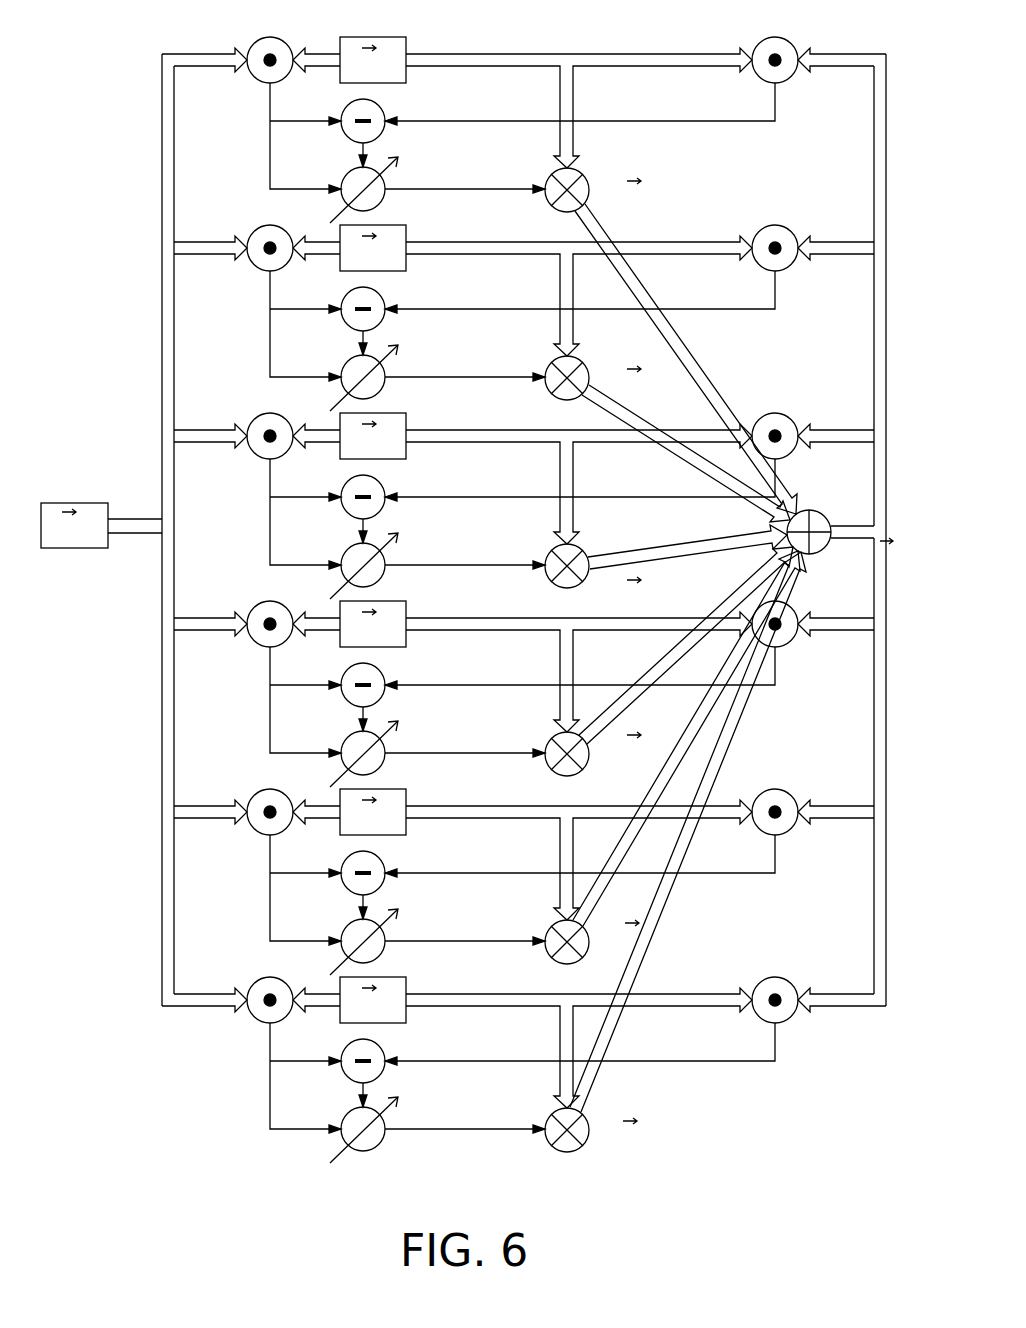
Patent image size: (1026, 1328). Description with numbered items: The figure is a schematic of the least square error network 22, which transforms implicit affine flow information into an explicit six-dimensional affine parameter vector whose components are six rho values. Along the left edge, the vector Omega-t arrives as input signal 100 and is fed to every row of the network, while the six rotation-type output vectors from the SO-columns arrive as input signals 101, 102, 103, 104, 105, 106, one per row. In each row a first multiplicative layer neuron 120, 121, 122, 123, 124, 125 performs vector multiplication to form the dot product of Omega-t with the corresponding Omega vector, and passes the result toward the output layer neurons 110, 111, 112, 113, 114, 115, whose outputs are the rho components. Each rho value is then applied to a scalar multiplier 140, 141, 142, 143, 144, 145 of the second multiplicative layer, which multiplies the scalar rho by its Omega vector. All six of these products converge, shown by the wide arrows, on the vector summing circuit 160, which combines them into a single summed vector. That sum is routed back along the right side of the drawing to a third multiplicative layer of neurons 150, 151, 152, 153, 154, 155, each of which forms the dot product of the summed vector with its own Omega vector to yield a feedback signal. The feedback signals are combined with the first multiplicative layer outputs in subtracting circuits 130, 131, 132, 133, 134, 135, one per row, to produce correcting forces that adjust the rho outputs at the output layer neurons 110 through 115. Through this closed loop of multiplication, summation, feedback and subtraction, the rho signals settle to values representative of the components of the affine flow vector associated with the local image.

The least square error (LSE) network 22 is at (849, 1033).
The input signal 100 is at (90, 549).
The input signal 101 is at (408, 43).
The input signal 102 is at (408, 231).
The input signal 103 is at (408, 419).
The input signal 104 is at (408, 607).
The input signal 105 is at (408, 795).
The input signal 106 is at (408, 983).
The output layer neuron 110 is at (393, 177).
The output layer neuron 111 is at (393, 365).
The output layer neuron 112 is at (393, 553).
The output layer neuron 113 is at (393, 741).
The output layer neuron 114 is at (393, 929).
The output layer neuron 115 is at (393, 1117).
The first multiplicative layer neuron 120 is at (263, 85).
The first multiplicative layer neuron 121 is at (263, 273).
The first multiplicative layer neuron 122 is at (263, 461).
The first multiplicative layer neuron 123 is at (263, 649).
The first multiplicative layer neuron 124 is at (263, 837).
The first multiplicative layer neuron 125 is at (263, 1025).
The subtracting circuit 130 is at (382, 104).
The subtracting circuit 131 is at (382, 292).
The subtracting circuit 132 is at (382, 480).
The subtracting circuit 133 is at (382, 668).
The subtracting circuit 134 is at (382, 856).
The subtracting circuit 135 is at (382, 1044).
The scalar multiplier 140 is at (589, 181).
The scalar multiplier 141 is at (589, 369).
The scalar multiplier 142 is at (592, 557).
The scalar multiplier 143 is at (589, 745).
The scalar multiplier 144 is at (590, 930).
The scalar multiplier 145 is at (585, 1120).
The third multiplicative layer neuron 150 is at (806, 49).
The third multiplicative layer neuron 151 is at (806, 237).
The third multiplicative layer neuron 152 is at (806, 425).
The third multiplicative layer neuron 153 is at (806, 613).
The third multiplicative layer neuron 154 is at (806, 801).
The third multiplicative layer neuron 155 is at (806, 989).
The vector summing circuit 160 is at (834, 524).